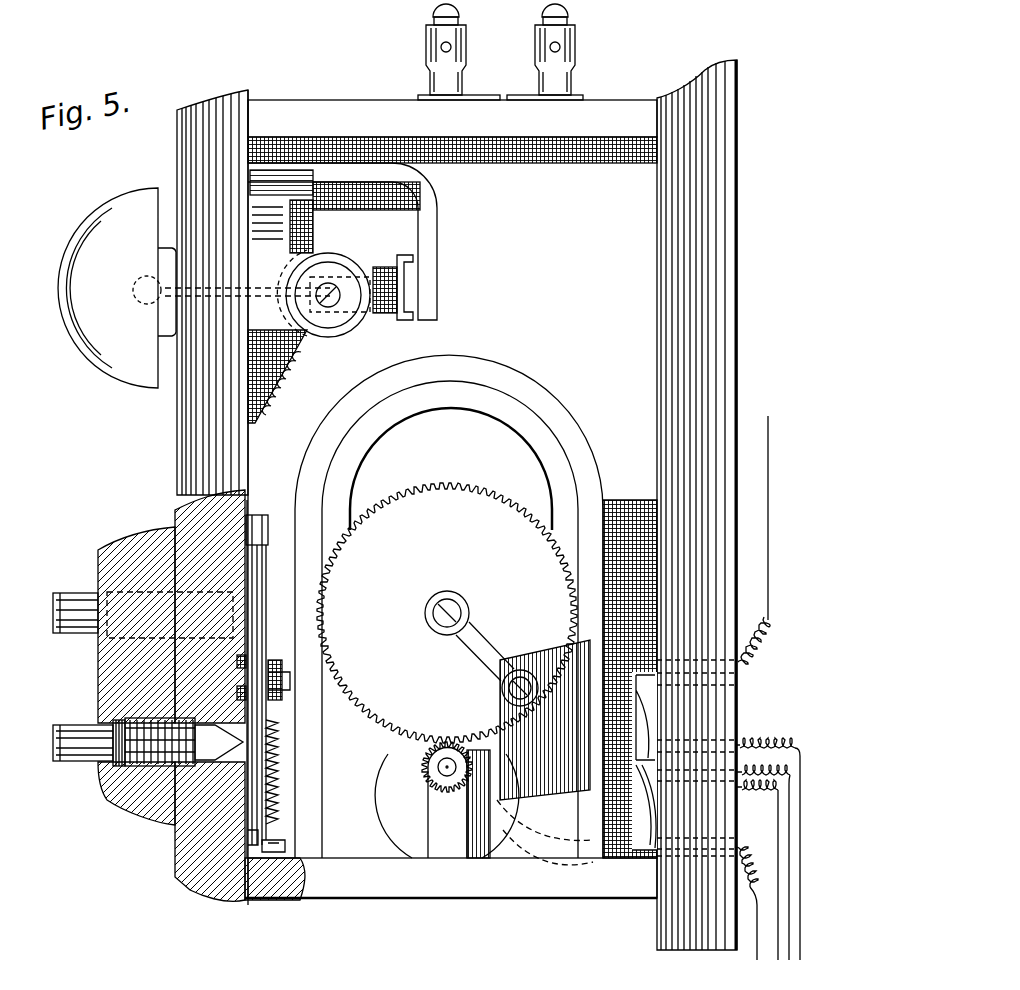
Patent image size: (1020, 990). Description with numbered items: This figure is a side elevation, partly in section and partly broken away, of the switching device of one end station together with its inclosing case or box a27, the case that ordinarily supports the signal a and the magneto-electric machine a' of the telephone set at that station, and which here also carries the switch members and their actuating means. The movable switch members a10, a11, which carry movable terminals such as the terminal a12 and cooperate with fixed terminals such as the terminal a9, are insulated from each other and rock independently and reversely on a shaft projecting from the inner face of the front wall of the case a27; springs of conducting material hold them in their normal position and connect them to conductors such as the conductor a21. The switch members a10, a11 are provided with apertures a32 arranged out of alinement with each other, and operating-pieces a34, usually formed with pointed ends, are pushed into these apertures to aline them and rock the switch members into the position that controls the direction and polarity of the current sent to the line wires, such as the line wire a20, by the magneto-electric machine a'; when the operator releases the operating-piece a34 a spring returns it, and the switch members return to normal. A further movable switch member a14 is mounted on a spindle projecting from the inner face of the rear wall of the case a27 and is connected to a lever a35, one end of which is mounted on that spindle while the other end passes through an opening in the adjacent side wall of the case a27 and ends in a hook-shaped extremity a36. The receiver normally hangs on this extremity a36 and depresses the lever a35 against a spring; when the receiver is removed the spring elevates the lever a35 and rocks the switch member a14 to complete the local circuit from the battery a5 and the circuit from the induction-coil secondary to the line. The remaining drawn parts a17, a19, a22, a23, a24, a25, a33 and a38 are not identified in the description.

The signal a is at (111, 288).
The magneto-electric machine a' is at (449, 593).
The battery a5 is at (253, 522).
The fixed terminal a9 is at (263, 832).
The movable switch member a10 is at (251, 667).
The movable switch member a11 is at (249, 683).
The movable terminal a12 is at (253, 643).
The movable switch member a14 is at (655, 693).
The spring a17 is at (287, 382).
The wire a19 is at (769, 612).
The line wire a20 is at (747, 858).
The conductor a21 is at (273, 785).
The wire a22 is at (797, 740).
The wire a23 is at (757, 791).
The wire a24 is at (783, 758).
The contact a25 is at (276, 701).
The inclosing case a27 is at (357, 110).
The aperture a32 is at (243, 755).
The stud a33 is at (80, 603).
The operating-piece a34 is at (150, 727).
The lever a35 is at (652, 725).
The hook-shaped extremity a36 is at (537, 850).
The adjusting screw a38 is at (86, 738).